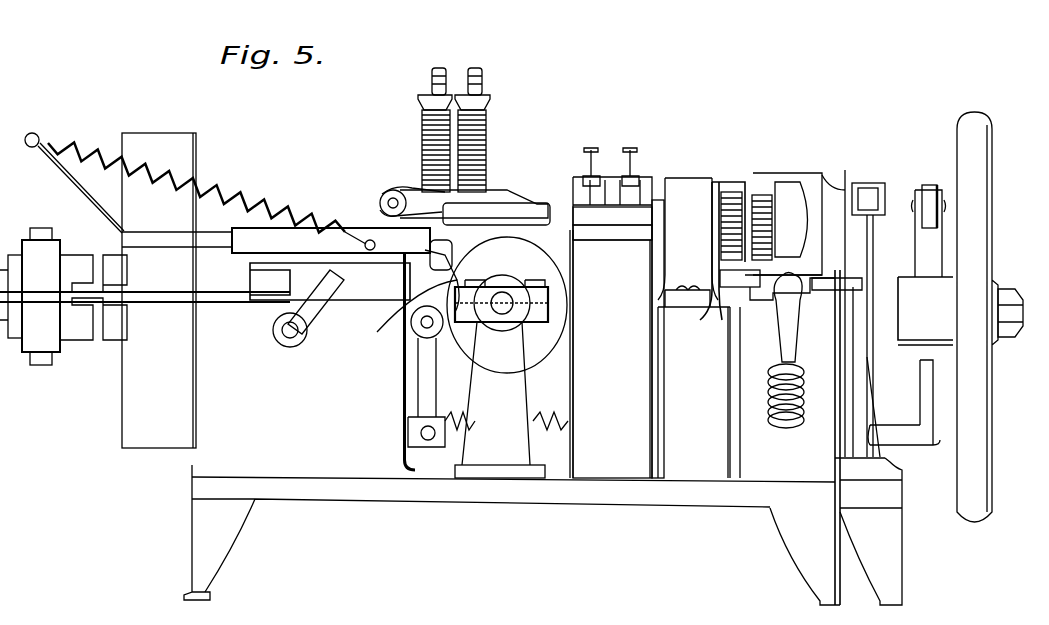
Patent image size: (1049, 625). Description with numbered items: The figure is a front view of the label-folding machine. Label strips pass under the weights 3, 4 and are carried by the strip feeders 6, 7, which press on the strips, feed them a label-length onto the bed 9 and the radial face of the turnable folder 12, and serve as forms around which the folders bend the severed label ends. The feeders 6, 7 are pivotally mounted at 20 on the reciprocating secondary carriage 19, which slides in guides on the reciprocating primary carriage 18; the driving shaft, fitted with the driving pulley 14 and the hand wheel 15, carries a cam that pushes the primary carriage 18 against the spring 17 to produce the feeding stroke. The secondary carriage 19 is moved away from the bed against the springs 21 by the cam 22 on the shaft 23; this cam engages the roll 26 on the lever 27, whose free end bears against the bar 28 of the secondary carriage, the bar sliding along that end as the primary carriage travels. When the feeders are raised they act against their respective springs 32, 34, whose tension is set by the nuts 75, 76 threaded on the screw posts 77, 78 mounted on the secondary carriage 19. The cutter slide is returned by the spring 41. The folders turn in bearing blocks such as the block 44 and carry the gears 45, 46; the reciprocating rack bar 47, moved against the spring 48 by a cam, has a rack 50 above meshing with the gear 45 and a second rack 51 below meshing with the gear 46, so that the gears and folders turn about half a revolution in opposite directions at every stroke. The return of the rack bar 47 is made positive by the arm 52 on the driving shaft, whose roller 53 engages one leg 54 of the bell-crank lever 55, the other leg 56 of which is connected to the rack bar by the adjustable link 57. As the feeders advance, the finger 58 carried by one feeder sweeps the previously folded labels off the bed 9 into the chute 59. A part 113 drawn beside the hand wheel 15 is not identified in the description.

The weight 3 is at (594, 172).
The weight 4 is at (635, 172).
The strip feeder 6 is at (496, 200).
The strip feeder 7 is at (412, 195).
The bed 9 is at (620, 238).
The turnable folder 12 is at (612, 216).
The driving pulley 14 is at (172, 370).
The hand wheel 15 is at (948, 380).
The spring 17 is at (288, 348).
The primary carriage 18 is at (372, 299).
The secondary carriage 19 is at (200, 236).
The pivot 20 is at (383, 199).
The springs 21 is at (252, 206).
The cam 22 is at (507, 305).
The shaft 23 is at (503, 318).
The roll 26 is at (435, 336).
The lever 27 is at (437, 391).
The bar 28 is at (390, 322).
The spring 32 is at (486, 140).
The spring 34 is at (422, 134).
The spring 41 is at (550, 409).
The bearing block 44 is at (699, 328).
The gear 45 is at (776, 222).
The gear 46 is at (735, 192).
The reciprocating bar 47 is at (790, 277).
The spring 48 is at (797, 370).
The rack 50 is at (766, 195).
The second rack 51 is at (731, 289).
The arm 52 is at (929, 233).
The roller 53 is at (926, 205).
The leg 54 is at (924, 378).
The bell-crank lever 55 is at (904, 434).
The leg 56 is at (873, 262).
The adjustable link 57 is at (884, 190).
The finger 58 is at (496, 214).
The chute 59 is at (612, 359).
The nut 75 is at (418, 102).
The nut 76 is at (490, 104).
The screw post 77 is at (432, 80).
The screw post 78 is at (482, 86).
The nut 113 is at (1023, 313).